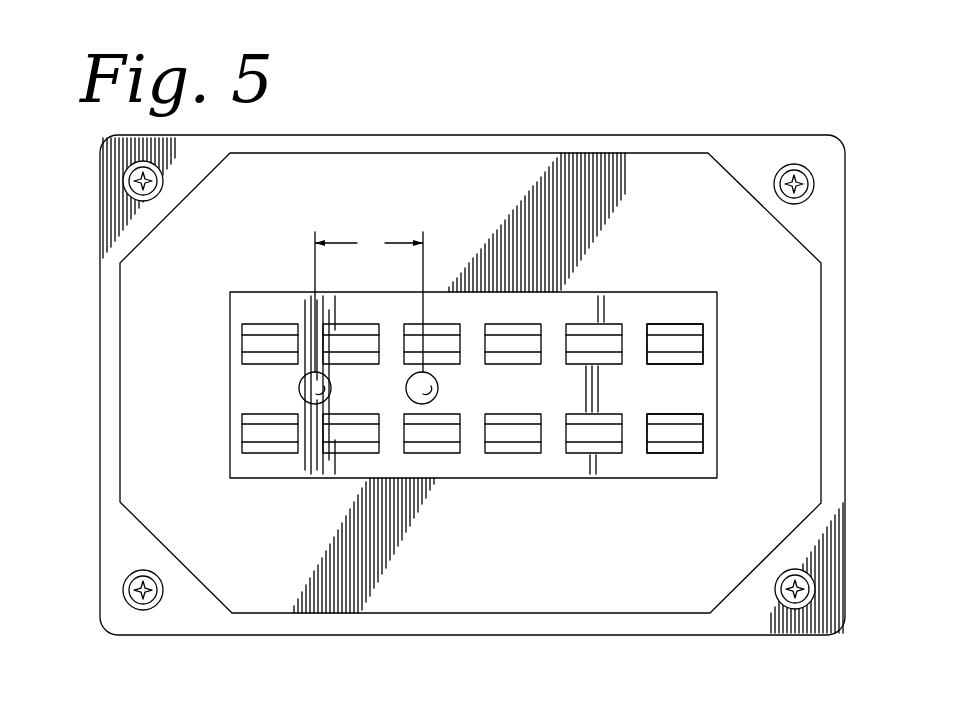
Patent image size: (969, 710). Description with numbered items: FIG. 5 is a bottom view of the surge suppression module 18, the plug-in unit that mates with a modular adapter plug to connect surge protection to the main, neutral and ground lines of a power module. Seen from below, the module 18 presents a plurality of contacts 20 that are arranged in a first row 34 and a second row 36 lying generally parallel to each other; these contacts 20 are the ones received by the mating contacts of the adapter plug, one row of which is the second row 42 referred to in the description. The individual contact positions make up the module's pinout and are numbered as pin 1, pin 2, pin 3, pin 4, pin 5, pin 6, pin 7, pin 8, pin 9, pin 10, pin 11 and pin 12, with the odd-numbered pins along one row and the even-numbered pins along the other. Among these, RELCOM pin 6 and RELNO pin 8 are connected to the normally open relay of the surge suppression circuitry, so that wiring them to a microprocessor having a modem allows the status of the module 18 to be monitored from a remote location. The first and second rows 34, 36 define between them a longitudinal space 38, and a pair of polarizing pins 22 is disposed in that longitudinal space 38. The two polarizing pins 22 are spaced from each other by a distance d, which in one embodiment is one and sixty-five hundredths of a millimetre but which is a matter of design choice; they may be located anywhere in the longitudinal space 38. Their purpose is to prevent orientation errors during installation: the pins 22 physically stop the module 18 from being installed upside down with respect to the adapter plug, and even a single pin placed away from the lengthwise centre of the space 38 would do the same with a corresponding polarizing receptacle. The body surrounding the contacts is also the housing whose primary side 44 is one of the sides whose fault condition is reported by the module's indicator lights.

The pin 1 is at (258, 434).
The pin 2 is at (272, 340).
The pin 3 is at (345, 434).
The pin 4 is at (351, 340).
The pin 5 is at (434, 434).
The RELCOM pin 6 is at (431, 340).
The pin 7 is at (514, 434).
The RELNO pin 8 is at (518, 342).
The pin 9 is at (594, 434).
The pin 10 is at (597, 342).
The pin 11 is at (680, 436).
The pin 12 is at (680, 342).
The surge suppression module 18 is at (582, 135).
The contacts 20 is at (668, 342).
The polarizing pins 22 is at (300, 388).
The first row 34 is at (730, 435).
The second row 36 is at (730, 341).
The longitudinal space 38 is at (481, 376).
The second row 42 is at (478, 172).
The primary side 44 is at (495, 598).
The distance d is at (369, 301).